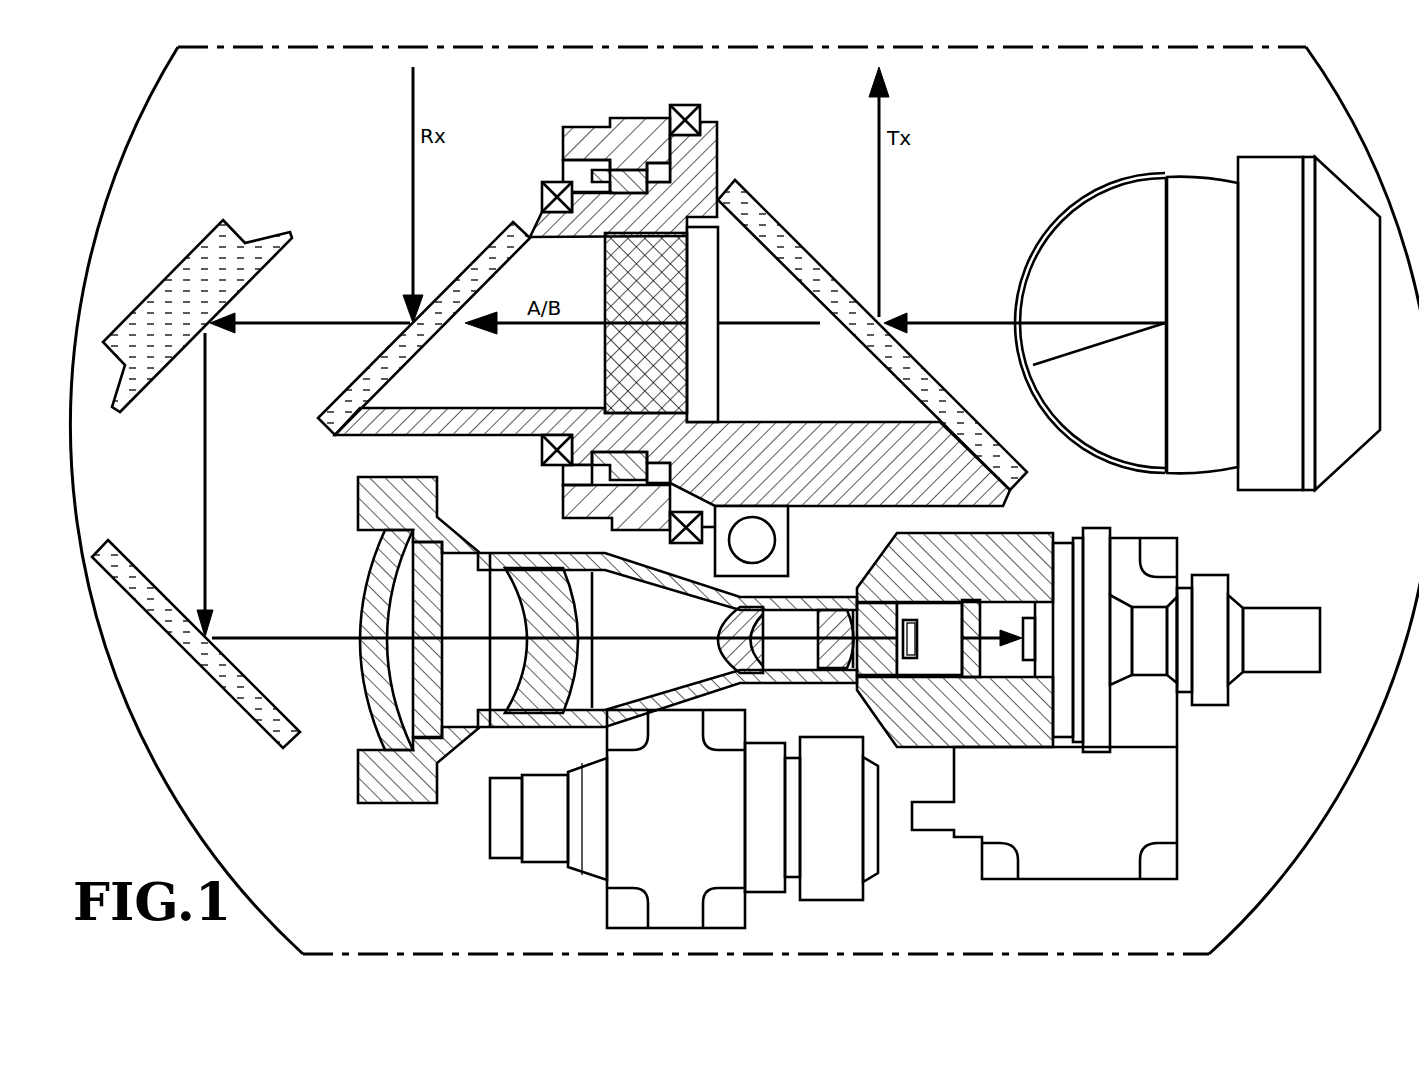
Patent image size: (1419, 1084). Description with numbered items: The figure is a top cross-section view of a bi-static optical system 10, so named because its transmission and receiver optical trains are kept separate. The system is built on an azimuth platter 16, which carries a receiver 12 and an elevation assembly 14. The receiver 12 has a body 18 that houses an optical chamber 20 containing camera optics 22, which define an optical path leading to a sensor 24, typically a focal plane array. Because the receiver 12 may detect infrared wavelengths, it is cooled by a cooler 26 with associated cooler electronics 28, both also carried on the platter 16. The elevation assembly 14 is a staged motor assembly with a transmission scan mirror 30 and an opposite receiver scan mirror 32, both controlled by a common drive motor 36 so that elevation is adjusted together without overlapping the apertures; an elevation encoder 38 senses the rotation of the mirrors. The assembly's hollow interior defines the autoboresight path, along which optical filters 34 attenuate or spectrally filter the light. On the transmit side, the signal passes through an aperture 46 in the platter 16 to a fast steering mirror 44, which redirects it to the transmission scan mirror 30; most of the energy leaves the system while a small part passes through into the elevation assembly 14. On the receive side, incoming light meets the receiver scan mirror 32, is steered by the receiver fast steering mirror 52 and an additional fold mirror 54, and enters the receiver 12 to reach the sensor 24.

The bi-static optical system 10 is at (1272, 918).
The receiver 12 is at (1206, 721).
The elevation assembly 14 is at (740, 128).
The azimuth platter 16 is at (1338, 96).
The body 18 is at (1030, 535).
The optical chamber 20 is at (652, 660).
The camera optics 22 is at (432, 580).
The sensor 24 is at (1023, 650).
The cooler 26 is at (656, 867).
The cooler electronics 28 is at (1054, 860).
The transmission scan mirror 30 is at (792, 232).
The receiver scan mirror 32 is at (495, 243).
The optical filters 34 is at (605, 360).
The drive motor 36 is at (603, 125).
The elevation encoder 38 is at (765, 540).
The transmission line of sight stabilization fast steering mirror 44 is at (1204, 176).
The aperture 46 is at (1092, 242).
The receiver line of sight stabilization fast steering mirror 52 is at (172, 287).
The fold mirror 54 is at (208, 675).